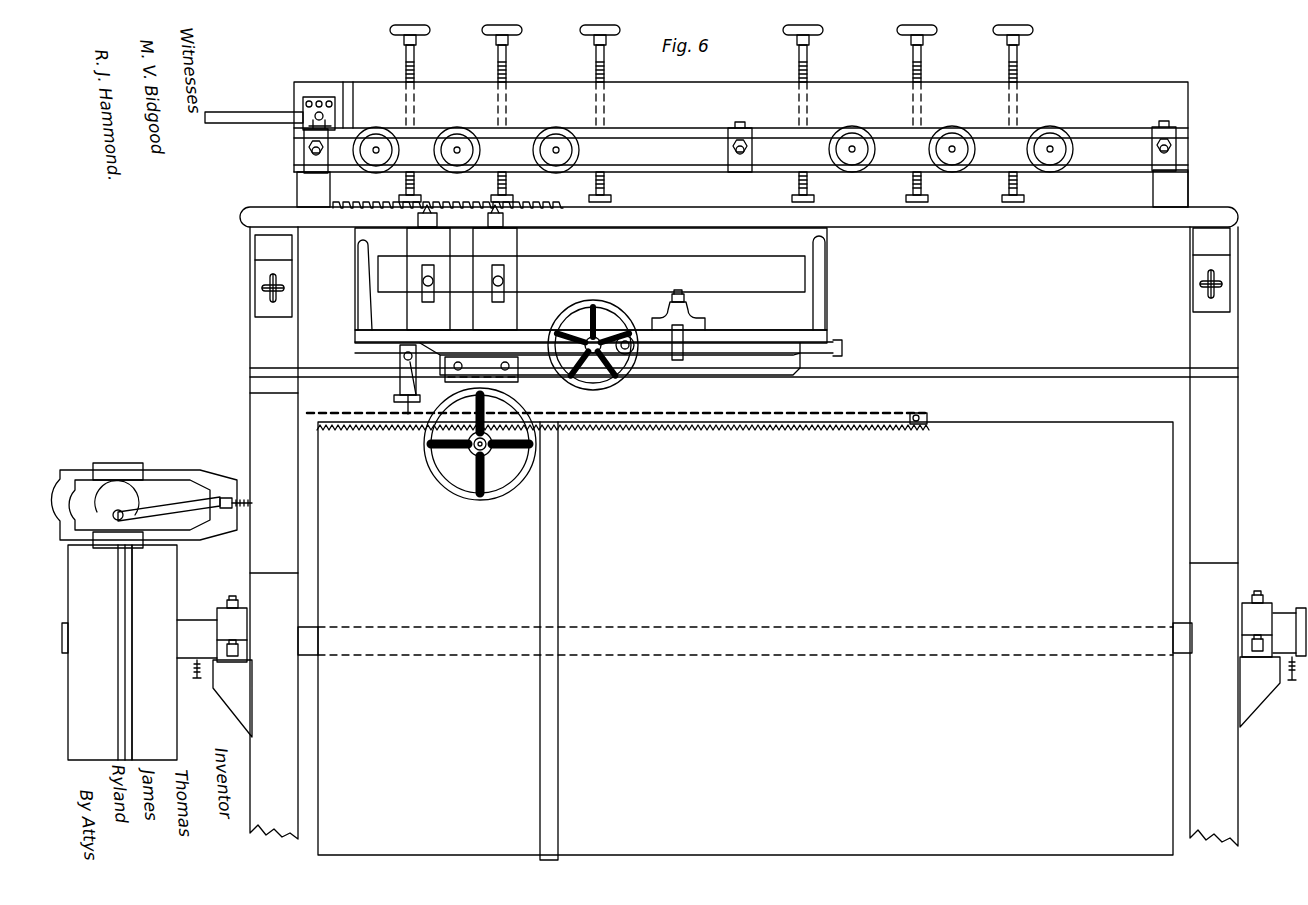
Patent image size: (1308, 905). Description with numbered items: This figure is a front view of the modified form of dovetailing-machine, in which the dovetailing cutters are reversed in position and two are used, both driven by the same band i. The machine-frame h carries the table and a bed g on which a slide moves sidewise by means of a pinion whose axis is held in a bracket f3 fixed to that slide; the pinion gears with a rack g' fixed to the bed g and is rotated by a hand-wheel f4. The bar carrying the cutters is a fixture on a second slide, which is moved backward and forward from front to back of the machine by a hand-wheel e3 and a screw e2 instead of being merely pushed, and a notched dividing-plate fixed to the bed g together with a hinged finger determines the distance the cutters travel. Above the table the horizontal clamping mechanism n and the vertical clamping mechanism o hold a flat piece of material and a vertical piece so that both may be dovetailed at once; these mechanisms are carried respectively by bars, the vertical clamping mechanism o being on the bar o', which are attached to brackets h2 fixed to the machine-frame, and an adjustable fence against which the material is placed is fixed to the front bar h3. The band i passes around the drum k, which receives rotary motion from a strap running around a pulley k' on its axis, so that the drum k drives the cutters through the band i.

The horizontal clamping mechanism n is at (683, 116).
The front bar h3 is at (741, 143).
The bar carrying vertical clamping mechanism o' is at (741, 141).
The vertical clamping mechanism o is at (720, 149).
The brackets h2 is at (742, 188).
The rotating spindle a' is at (462, 216).
The screw e2 is at (592, 328).
The hand-wheel e3 is at (630, 323).
The bracket f3 is at (481, 368).
The bed g is at (744, 385).
The rack g' is at (623, 427).
The hand-wheel f4 is at (480, 444).
The drum k is at (745, 638).
The band or cord i is at (549, 641).
The machine-frame h is at (739, 526).
The pulley k' is at (151, 611).